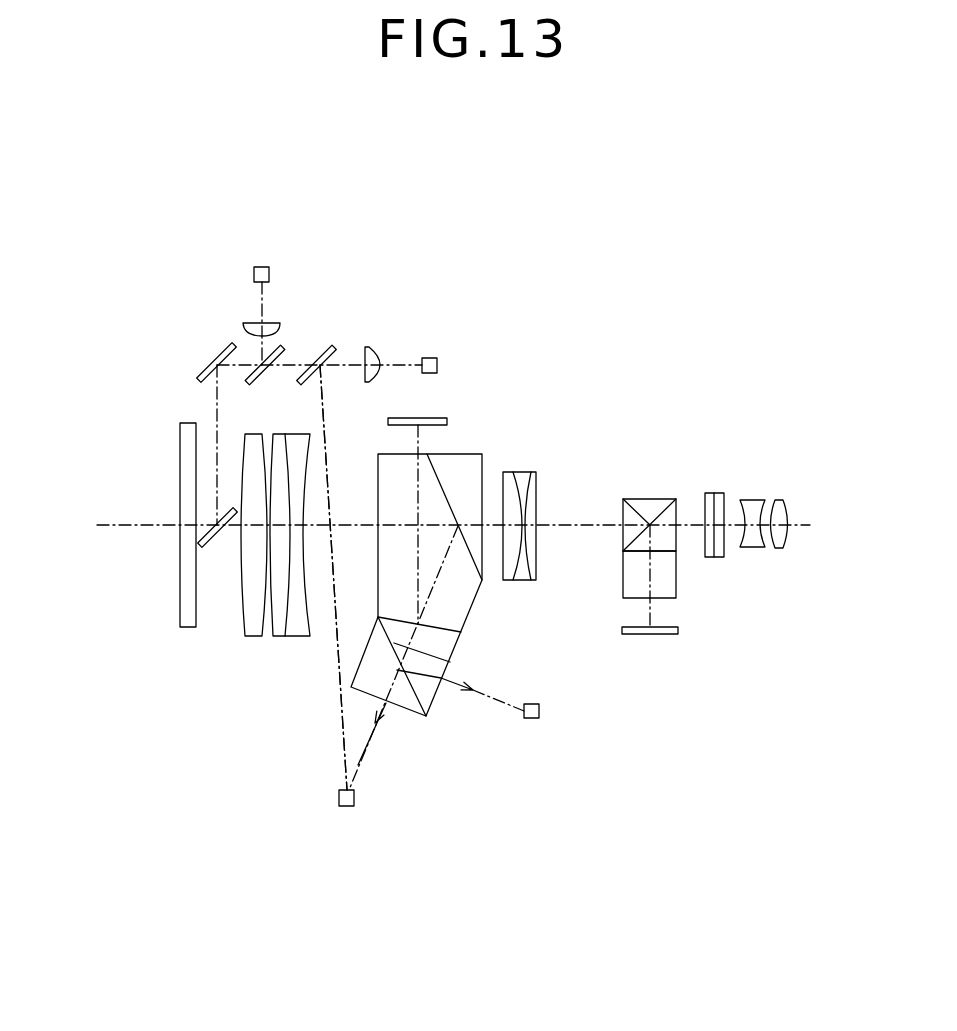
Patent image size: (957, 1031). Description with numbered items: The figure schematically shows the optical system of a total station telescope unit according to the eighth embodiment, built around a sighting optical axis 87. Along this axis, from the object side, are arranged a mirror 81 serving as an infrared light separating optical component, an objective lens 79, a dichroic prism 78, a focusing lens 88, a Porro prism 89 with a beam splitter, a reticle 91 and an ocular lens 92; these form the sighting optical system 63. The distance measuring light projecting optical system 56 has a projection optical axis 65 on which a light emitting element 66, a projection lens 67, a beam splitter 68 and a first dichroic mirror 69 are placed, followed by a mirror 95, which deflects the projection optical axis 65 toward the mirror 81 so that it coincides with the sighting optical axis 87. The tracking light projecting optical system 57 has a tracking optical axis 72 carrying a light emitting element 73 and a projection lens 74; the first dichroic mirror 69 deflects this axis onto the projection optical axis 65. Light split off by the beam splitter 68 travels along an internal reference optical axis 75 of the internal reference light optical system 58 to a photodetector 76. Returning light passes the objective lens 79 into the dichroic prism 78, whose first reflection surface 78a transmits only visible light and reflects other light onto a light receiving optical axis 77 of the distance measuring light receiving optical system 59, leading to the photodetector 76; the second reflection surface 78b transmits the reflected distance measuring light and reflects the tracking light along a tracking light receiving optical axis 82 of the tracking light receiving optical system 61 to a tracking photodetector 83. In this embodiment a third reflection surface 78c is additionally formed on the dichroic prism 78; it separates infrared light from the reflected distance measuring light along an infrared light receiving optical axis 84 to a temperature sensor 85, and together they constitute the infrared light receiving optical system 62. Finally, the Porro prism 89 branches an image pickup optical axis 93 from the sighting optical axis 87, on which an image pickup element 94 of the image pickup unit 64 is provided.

The distance measuring light projecting optical system 56 is at (440, 318).
The tracking light projecting optical system 57 is at (256, 257).
The internal reference light optical system 58 is at (320, 674).
The distance measuring light receiving optical system 59 is at (413, 684).
The tracking light receiving optical system 61 is at (455, 480).
The infrared light receiving optical system 62 is at (510, 740).
The sighting optical system 63 is at (780, 528).
The image pickup unit 64 is at (649, 614).
The projection optical axis 65 is at (397, 365).
The light emitting element 66 is at (437, 357).
The projection lens 67 is at (368, 347).
The beam splitter 68 is at (322, 343).
The first dichroic mirror 69 is at (262, 378).
The tracking optical axis 72 is at (263, 307).
The light emitting element 73 is at (262, 266).
The projection lens 74 is at (247, 322).
The internal reference optical axis 75 is at (340, 720).
The photodetector 76 is at (337, 797).
The light receiving optical axis 77 is at (370, 740).
The dichroic prism 78 is at (435, 559).
The first reflection surface 78a is at (440, 490).
The second reflection surface 78b is at (437, 626).
The third reflection surface 78c is at (420, 652).
The objective lens 79 is at (277, 649).
The mirror 81 is at (217, 545).
The tracking light receiving optical axis 82 is at (415, 437).
The tracking photodetector 83 is at (437, 413).
The infrared light receiving optical axis 84 is at (492, 698).
The temperature sensor 85 is at (540, 712).
The sighting optical axis 87 is at (128, 523).
The focusing lens 88 is at (510, 470).
The Porro prism with a beam splitter 89 is at (623, 551).
The reticle 91 is at (714, 560).
The ocular lens 92 is at (746, 486).
The image pickup optical axis 93 is at (648, 612).
The image pickup element 94 is at (630, 634).
The mirror 95 is at (200, 365).